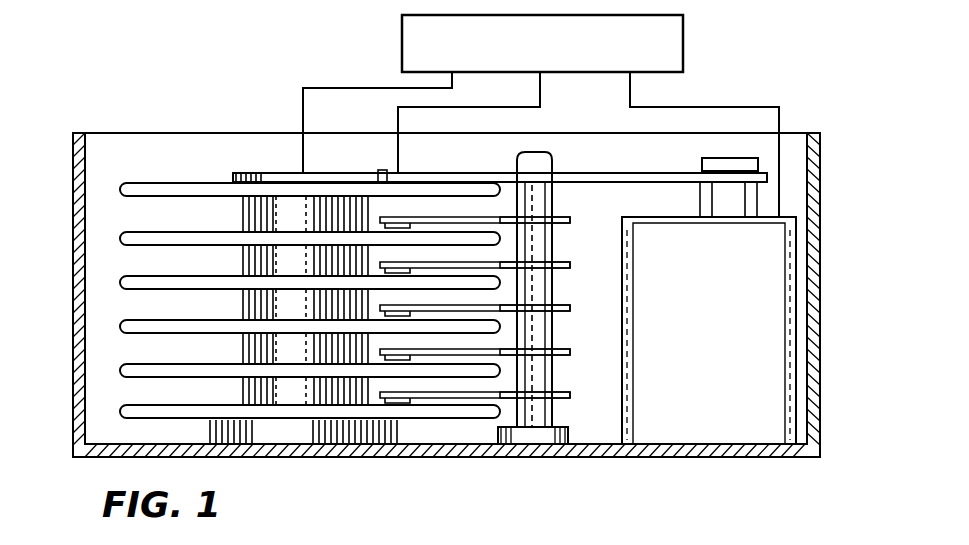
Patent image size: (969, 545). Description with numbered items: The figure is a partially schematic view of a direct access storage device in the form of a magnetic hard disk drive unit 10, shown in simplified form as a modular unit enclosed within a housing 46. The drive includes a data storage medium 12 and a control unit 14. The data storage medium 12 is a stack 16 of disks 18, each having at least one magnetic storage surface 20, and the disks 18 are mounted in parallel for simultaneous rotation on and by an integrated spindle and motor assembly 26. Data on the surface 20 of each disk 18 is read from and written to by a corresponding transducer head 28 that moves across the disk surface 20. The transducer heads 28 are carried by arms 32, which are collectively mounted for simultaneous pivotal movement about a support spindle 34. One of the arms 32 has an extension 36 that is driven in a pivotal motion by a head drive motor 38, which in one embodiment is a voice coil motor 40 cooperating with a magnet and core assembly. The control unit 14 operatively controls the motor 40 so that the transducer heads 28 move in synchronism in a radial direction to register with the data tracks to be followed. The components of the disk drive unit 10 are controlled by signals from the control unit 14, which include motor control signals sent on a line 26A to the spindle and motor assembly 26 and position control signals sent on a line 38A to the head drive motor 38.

The magnetic hard disk drive unit 10 is at (778, 50).
The data storage medium 12 is at (248, 94).
The control unit 14 is at (683, 33).
The stack 16 is at (198, 160).
The disks 18 is at (120, 190).
The magnetic storage surface 20 is at (134, 183).
The integrated spindle and motor assembly 26 is at (292, 397).
The line 26A is at (360, 88).
The transducer head 28 is at (383, 170).
The arms 32 is at (567, 306).
The support spindle 34 is at (557, 408).
The extension 36 is at (623, 172).
The head drive motor 38 is at (728, 428).
The line 38A is at (698, 107).
The voice coil motor 40 is at (760, 203).
The housing 46 is at (822, 358).